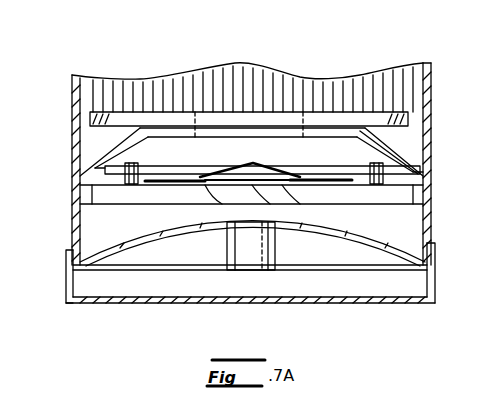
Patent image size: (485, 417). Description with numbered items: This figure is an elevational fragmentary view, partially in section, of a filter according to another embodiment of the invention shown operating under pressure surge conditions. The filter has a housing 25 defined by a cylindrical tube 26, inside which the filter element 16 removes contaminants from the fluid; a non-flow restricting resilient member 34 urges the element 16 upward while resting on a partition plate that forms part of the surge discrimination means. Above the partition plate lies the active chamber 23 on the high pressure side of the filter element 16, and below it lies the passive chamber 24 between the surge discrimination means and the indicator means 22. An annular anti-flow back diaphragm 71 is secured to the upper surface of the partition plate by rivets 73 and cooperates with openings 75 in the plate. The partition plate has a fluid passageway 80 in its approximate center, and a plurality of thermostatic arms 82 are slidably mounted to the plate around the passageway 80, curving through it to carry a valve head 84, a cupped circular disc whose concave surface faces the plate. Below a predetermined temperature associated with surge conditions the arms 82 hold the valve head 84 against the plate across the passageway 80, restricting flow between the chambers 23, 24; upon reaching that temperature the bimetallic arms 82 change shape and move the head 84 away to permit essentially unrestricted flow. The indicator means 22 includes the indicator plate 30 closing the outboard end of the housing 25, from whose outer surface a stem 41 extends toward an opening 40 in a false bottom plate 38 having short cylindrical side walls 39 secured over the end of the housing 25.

The filter element 16 is at (372, 79).
The housing 25 is at (432, 78).
The cylindrical tube 26 is at (432, 92).
The active chamber 23 is at (407, 138).
The resilient member 34 is at (403, 150).
The passive chamber 24 is at (413, 219).
The rivets 73 is at (139, 155).
The anti-flow back diaphragm 71 is at (165, 170).
The valve head 84 is at (260, 164).
The openings 75 is at (157, 184).
The thermostatic arms 82 is at (215, 181).
The fluid passageway 80 is at (252, 181).
The stem 41 is at (227, 247).
The indicator plate 30 is at (130, 250).
The opening 40 is at (243, 305).
The indicator means 22 is at (110, 275).
The false bottom plate 38 is at (313, 304).
The side walls 39 is at (437, 280).